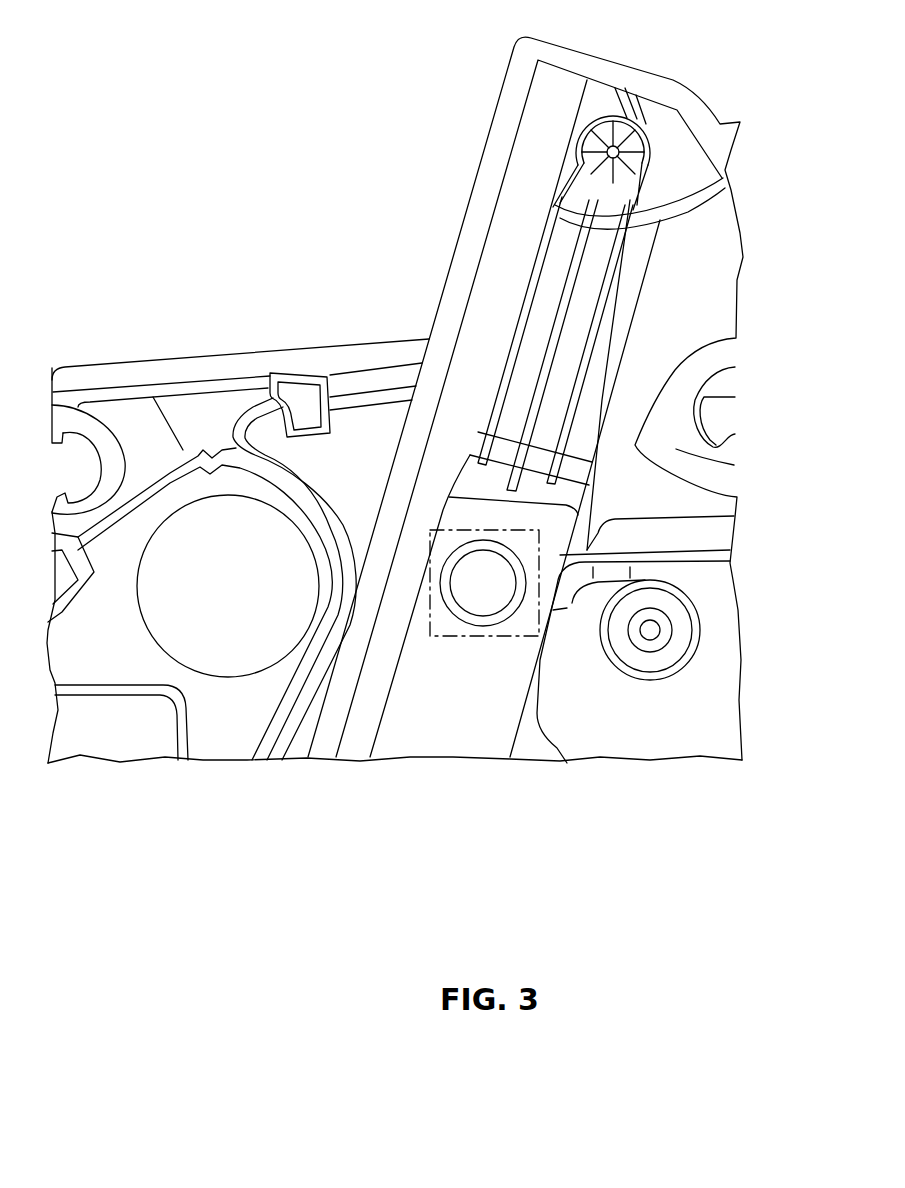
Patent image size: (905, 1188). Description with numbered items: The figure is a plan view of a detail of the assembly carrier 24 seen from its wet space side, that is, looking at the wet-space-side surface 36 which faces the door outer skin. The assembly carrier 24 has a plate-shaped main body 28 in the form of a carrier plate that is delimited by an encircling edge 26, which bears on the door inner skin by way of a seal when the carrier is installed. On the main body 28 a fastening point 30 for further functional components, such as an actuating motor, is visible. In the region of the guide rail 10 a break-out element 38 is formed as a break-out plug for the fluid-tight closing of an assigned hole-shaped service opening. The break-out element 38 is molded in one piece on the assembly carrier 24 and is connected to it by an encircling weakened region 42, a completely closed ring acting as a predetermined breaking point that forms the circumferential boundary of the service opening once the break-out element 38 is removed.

The guide rail 10 is at (543, 163).
The assembly carrier 24 is at (298, 243).
The encircling edge 26 is at (156, 355).
The main body 28 is at (663, 707).
The fastening point 30 is at (667, 633).
The wet-space-side surface 36 is at (250, 729).
The break-out element 38 is at (493, 577).
The weakened region 42 is at (517, 630).